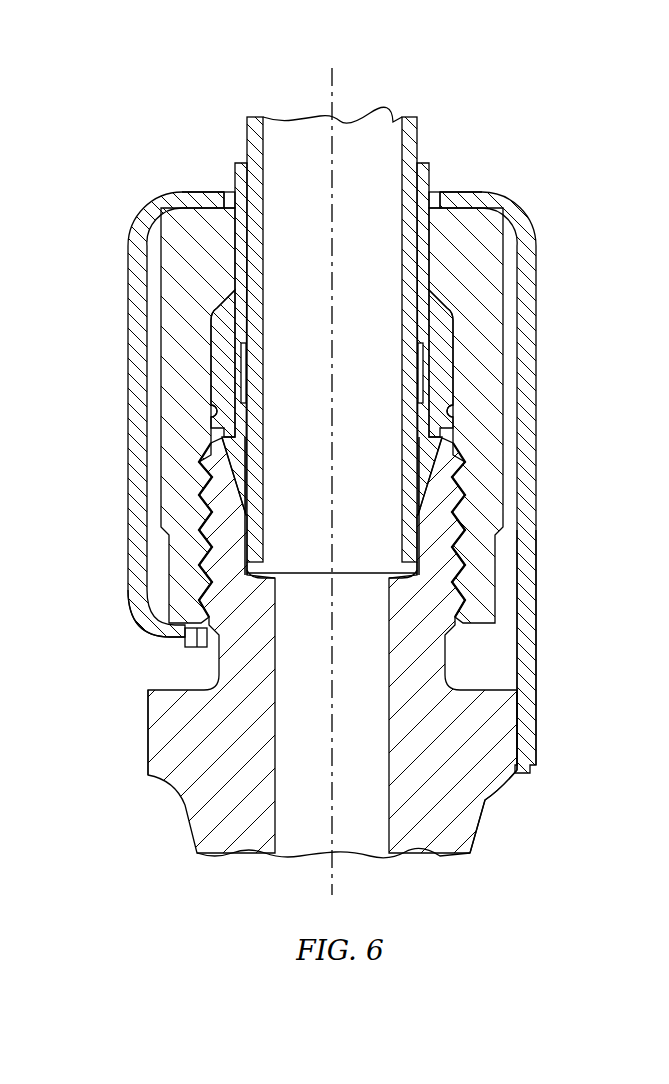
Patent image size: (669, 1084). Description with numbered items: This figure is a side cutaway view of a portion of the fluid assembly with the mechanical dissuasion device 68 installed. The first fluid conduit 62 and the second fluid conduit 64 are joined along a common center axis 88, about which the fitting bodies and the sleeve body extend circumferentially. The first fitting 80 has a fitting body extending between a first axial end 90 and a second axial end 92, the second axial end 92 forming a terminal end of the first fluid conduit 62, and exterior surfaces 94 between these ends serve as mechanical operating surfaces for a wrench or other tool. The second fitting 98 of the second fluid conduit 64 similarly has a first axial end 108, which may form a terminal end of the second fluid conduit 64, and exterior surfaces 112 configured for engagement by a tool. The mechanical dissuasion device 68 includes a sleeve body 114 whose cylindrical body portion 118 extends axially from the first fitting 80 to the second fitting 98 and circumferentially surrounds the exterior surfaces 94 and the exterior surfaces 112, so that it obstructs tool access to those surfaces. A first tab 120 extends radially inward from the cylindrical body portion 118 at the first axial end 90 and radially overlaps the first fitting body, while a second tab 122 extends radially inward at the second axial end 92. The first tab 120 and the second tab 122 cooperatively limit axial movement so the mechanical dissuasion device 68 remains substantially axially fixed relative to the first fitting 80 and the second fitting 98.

The first fluid conduit 62 is at (449, 162).
The second fluid conduit 64 is at (330, 681).
The mechanical dissuasion device 68 is at (373, 447).
The first fitting 80 is at (470, 352).
The axis 88 is at (343, 73).
The first axial end 90 is at (212, 192).
The second axial end 92 is at (186, 641).
The exterior surfaces 94 is at (160, 343).
The second fitting 98 is at (466, 783).
The first axial end 108 is at (456, 413).
The exterior surfaces 112 is at (148, 733).
The sleeve body 114 is at (527, 311).
The cylindrical body portion 118 is at (527, 571).
The first tab 120 is at (178, 198).
The second tab 122 is at (197, 647).